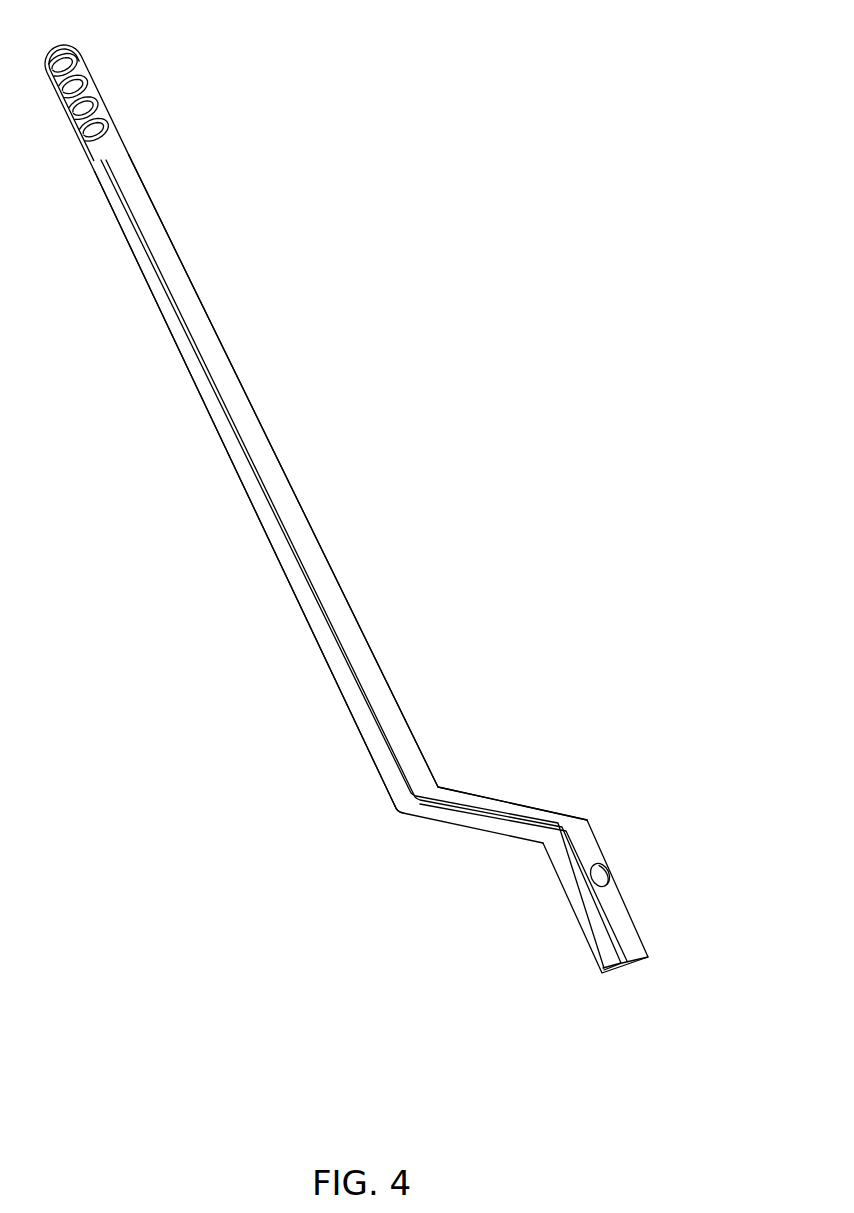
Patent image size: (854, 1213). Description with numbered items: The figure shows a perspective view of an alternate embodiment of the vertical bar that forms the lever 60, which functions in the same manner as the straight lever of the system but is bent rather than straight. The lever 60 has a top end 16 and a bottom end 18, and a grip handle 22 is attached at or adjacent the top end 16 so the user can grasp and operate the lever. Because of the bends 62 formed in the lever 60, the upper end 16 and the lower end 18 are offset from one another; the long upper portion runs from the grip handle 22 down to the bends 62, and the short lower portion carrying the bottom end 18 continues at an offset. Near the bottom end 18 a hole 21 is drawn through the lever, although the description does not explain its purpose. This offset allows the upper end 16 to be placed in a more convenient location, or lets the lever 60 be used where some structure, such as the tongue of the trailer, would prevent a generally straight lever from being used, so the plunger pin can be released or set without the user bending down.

The grip handle 22 is at (97, 110).
The top end 16 is at (140, 173).
The lever 60 is at (333, 600).
The bends 62 is at (445, 787).
The hole 21 is at (608, 875).
The bottom end 18 is at (637, 943).